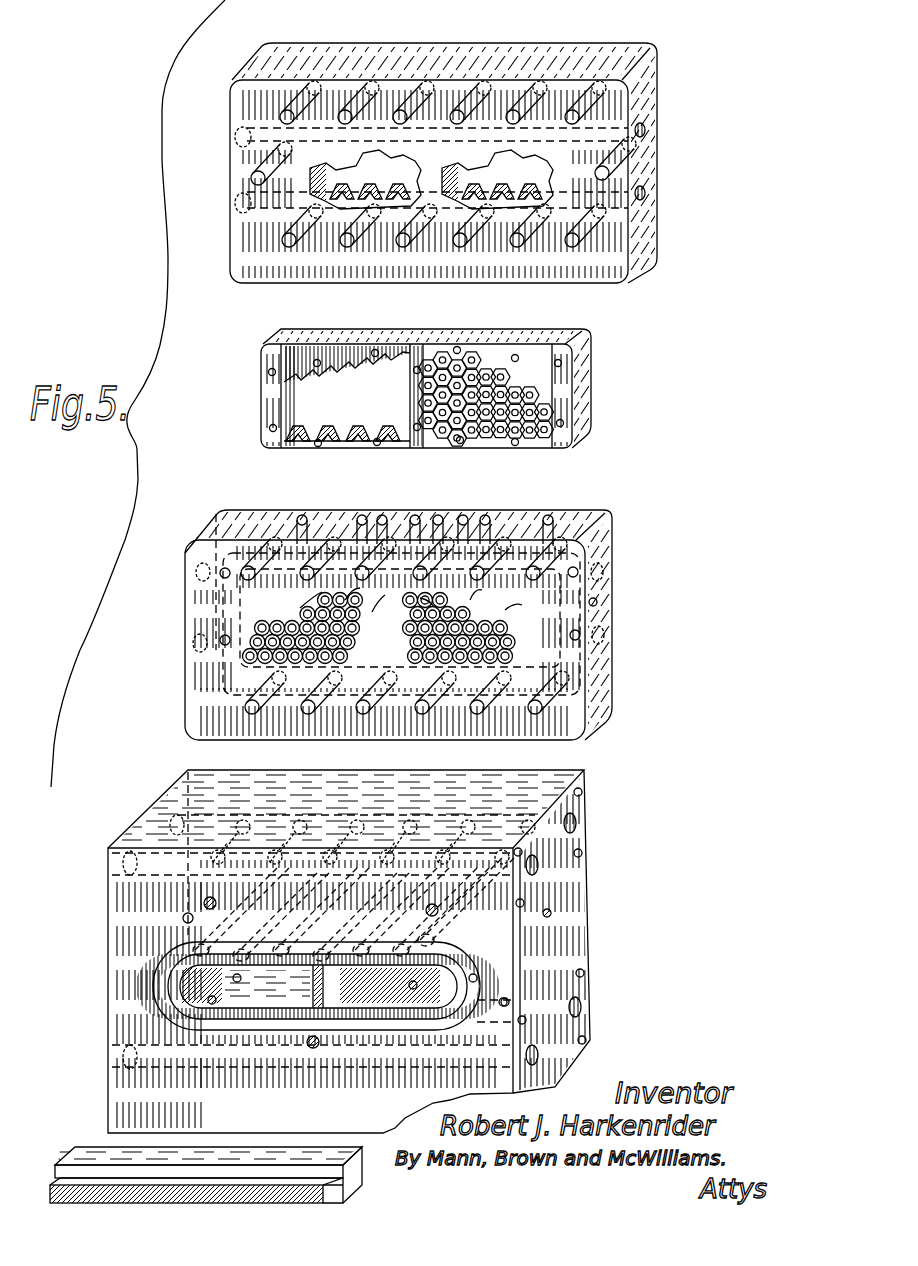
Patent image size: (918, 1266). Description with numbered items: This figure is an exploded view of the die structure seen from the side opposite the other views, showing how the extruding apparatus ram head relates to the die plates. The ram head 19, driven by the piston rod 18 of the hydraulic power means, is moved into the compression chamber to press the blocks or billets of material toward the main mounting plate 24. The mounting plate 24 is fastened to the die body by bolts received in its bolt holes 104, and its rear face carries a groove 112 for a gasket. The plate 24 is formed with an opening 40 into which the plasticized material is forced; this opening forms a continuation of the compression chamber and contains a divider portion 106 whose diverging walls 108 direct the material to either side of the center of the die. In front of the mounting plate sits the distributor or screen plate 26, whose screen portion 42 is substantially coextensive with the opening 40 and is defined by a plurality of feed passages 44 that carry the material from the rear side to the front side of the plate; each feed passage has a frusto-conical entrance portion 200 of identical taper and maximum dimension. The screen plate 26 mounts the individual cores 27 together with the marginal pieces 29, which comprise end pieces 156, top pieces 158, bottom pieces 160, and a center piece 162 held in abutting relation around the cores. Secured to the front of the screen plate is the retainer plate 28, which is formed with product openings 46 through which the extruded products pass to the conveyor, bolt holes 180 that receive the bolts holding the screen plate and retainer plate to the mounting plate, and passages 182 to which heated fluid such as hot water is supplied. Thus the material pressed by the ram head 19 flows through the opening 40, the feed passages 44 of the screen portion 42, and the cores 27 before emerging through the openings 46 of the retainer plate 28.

The piston rod 18 is at (55, 1193).
The ram head 19 is at (85, 1160).
The main mounting plate 24 is at (335, 951).
The distributor or screen plate 26 is at (393, 625).
The cores 27 is at (561, 392).
The retainer plate 28 is at (480, 163).
The marginal pieces 29 is at (422, 396).
The opening 40 is at (271, 1020).
The screen portion 42 is at (328, 644).
The feed passages 44 is at (262, 620).
The openings 46 is at (343, 161).
The bolt holes 104 is at (204, 905).
The divider portion 106 is at (325, 975).
The diverging walls 108 is at (300, 1000).
The groove 112 is at (160, 985).
The end pieces 156 is at (272, 420).
The top pieces 158 is at (381, 337).
The bottom pieces 160 is at (405, 446).
The center piece 162 is at (418, 448).
The bolt holes 180 is at (346, 112).
The passages 182 is at (645, 131).
The frusto-conical entrance portion 200 is at (392, 600).